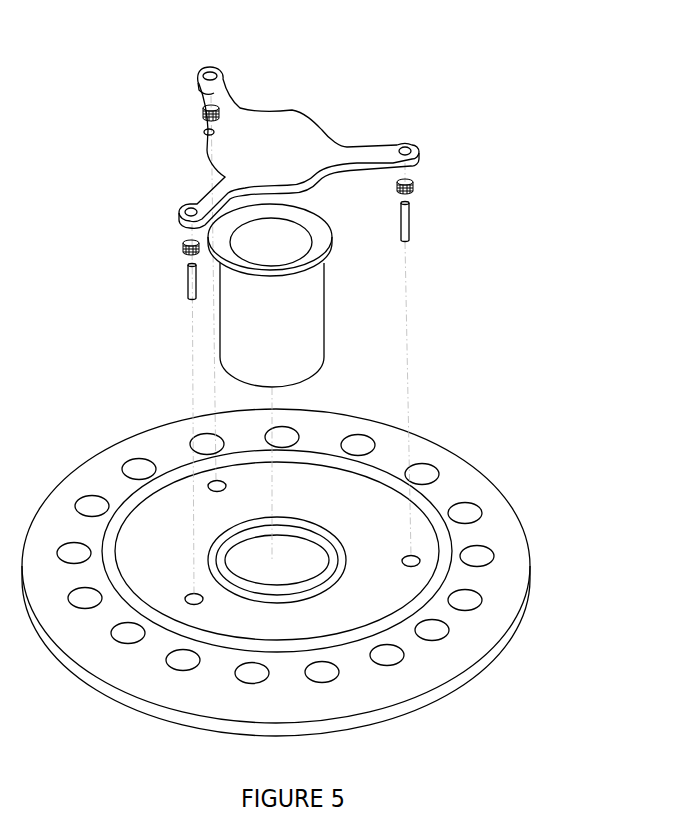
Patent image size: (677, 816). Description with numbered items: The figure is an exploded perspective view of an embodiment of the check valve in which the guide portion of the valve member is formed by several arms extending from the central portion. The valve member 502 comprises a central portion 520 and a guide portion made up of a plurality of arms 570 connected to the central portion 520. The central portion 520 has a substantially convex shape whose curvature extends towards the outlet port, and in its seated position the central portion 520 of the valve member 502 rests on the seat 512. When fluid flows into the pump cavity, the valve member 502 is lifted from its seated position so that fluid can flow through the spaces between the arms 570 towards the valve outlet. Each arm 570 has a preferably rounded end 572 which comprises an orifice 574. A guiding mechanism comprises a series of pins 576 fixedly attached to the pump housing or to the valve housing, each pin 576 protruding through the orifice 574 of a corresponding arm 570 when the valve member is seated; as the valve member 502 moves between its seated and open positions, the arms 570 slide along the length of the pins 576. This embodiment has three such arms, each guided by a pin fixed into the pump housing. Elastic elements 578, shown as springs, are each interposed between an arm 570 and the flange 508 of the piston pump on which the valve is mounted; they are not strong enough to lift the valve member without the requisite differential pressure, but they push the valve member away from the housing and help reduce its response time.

The valve member 502 is at (340, 73).
The flange 508 is at (513, 583).
The seat 512 is at (331, 257).
The central portion 520 is at (315, 138).
The arms 570 is at (368, 148).
The rounded end 572 is at (420, 160).
The orifice 574 is at (188, 208).
The pins 576 is at (189, 280).
The elastic elements 578 is at (183, 247).